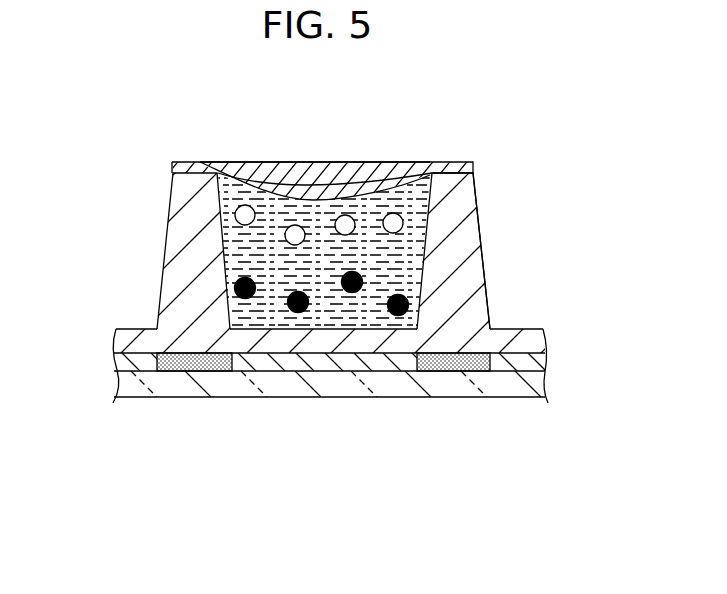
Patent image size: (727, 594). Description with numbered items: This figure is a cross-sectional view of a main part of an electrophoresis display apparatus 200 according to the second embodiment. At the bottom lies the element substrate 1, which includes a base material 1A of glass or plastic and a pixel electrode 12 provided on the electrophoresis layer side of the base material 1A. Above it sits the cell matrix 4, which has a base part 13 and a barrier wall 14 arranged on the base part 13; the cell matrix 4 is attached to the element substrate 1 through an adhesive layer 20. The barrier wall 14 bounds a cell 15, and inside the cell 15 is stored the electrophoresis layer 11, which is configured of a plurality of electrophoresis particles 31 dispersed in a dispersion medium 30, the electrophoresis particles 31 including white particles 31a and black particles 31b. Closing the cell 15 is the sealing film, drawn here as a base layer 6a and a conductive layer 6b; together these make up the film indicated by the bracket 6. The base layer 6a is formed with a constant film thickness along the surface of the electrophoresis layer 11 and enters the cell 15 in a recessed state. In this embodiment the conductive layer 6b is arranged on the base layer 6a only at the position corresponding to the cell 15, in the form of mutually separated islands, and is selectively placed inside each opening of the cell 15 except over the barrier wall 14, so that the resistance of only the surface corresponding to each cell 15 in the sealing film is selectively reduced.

The electrophoresis display apparatus 200 is at (460, 112).
The cell matrix 4 is at (71, 240).
The barrier wall 14 is at (187, 257).
The base part 13 is at (140, 329).
The electrophoresis layer 11 is at (478, 173).
The cover 6 is at (188, 108).
The base layer 6a is at (203, 160).
The conductive layer 6b is at (258, 160).
The cell 15 is at (330, 146).
The electrophoresis particles 31 is at (363, 447).
The dispersion medium 30 is at (248, 317).
The white particles 31a is at (296, 236).
The black particles 31b is at (298, 303).
The element substrate 1 is at (554, 353).
The pixel electrode 12 is at (399, 360).
The adhesive layer 20 is at (453, 371).
The base material 1A is at (521, 381).